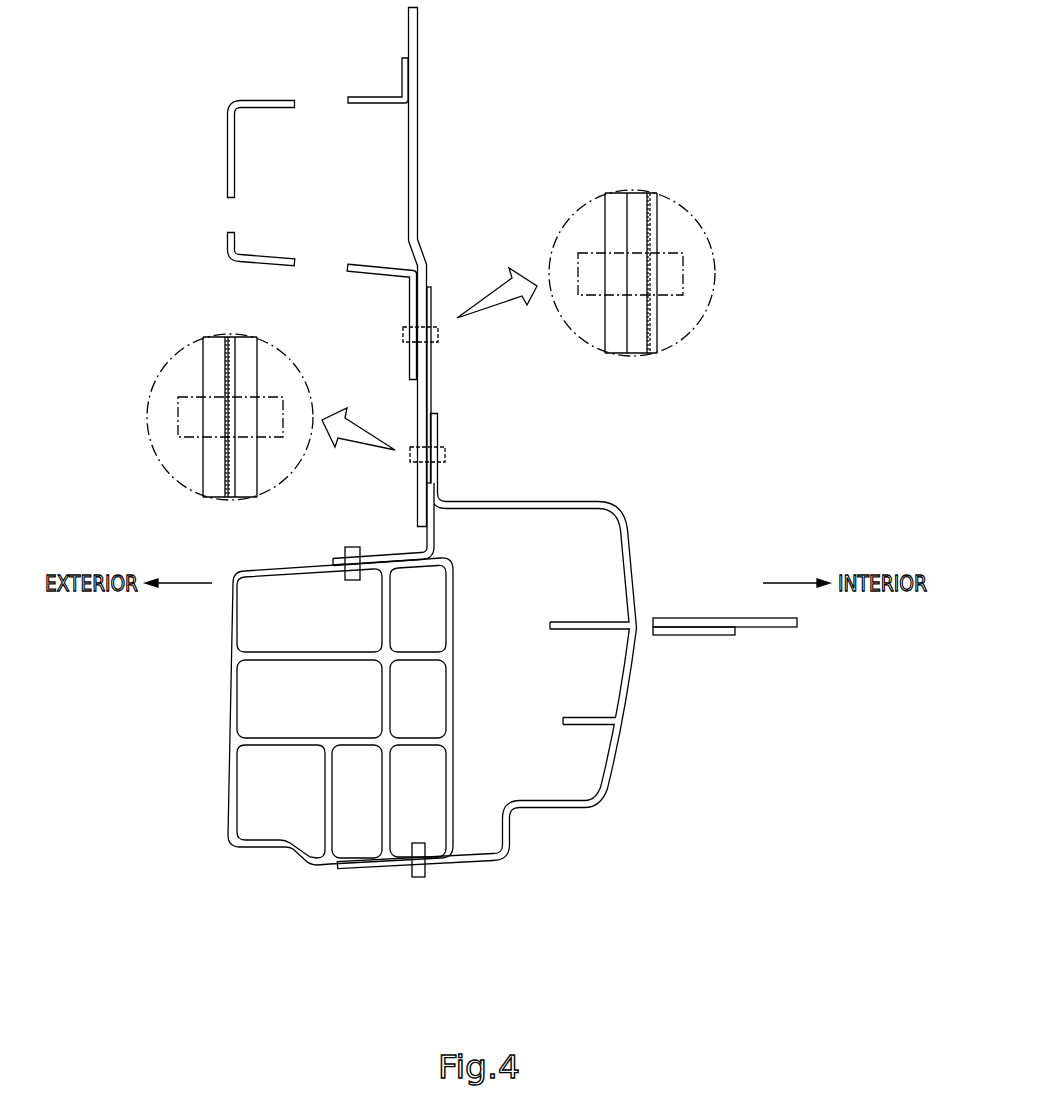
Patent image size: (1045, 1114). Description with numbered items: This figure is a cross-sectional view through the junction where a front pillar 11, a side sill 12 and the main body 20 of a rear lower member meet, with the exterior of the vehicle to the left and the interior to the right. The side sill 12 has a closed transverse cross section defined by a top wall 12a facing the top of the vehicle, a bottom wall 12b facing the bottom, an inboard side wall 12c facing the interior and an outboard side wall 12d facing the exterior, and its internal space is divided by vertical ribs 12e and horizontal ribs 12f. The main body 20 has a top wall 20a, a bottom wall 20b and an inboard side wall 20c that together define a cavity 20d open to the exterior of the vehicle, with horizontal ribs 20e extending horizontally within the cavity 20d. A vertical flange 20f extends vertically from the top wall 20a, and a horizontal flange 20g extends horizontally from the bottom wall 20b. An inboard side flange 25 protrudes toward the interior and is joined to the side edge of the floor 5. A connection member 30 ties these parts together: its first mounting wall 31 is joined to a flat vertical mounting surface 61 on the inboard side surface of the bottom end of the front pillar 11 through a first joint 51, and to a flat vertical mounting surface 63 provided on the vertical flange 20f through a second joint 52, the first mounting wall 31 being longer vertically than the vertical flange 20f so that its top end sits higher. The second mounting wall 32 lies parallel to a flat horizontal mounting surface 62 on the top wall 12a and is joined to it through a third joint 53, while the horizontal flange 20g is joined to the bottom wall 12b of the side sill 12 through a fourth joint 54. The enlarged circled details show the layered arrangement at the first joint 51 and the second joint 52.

The floor 5 is at (760, 628).
The front pillar 11 is at (420, 148).
The side sill 12 is at (200, 692).
The top wall 12a is at (290, 566).
The bottom wall 12b is at (333, 866).
The inboard side wall 12c is at (453, 697).
The outboard side wall 12d is at (226, 740).
The vertical rib 12e is at (382, 690).
The horizontal rib 12f is at (300, 651).
The main body 20 is at (652, 492).
The top wall 20a is at (563, 501).
The bottom wall 20b is at (548, 809).
The inboard side wall 20c is at (638, 676).
The cavity 20d is at (515, 634).
The horizontal rib 20e is at (585, 631).
The vertical flange 20f is at (438, 423).
The horizontal flange 20g is at (467, 868).
The inboard side flange 25 is at (722, 636).
The connection member 30 is at (455, 540).
The first mounting wall 31 is at (430, 292).
The second mounting wall 32 is at (388, 553).
The first joint 51 is at (450, 333).
The second joint 52 is at (455, 455).
The third joint 53 is at (355, 545).
The fourth joint 54 is at (418, 880).
The mounting surface 61 is at (225, 355).
The mounting surface 62 is at (337, 556).
The mounting surface 63 is at (233, 338).